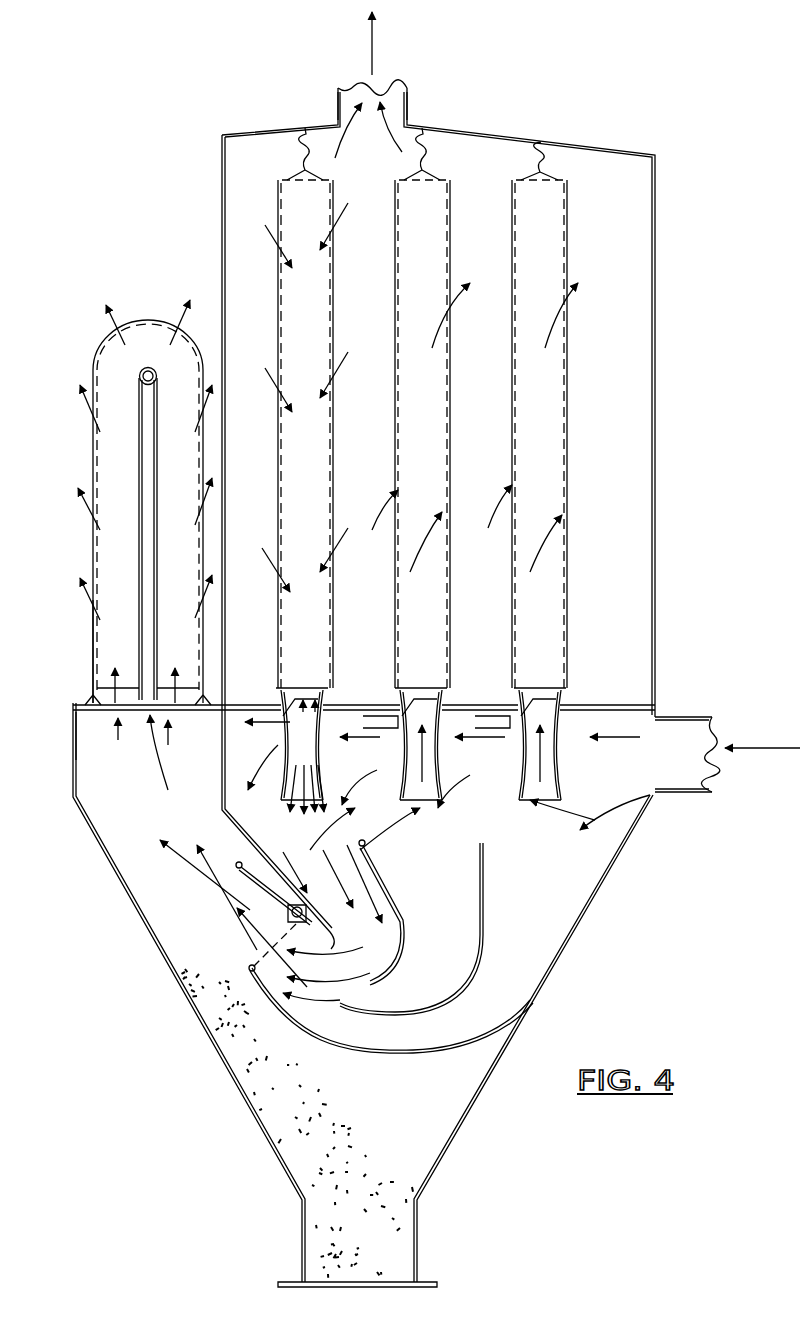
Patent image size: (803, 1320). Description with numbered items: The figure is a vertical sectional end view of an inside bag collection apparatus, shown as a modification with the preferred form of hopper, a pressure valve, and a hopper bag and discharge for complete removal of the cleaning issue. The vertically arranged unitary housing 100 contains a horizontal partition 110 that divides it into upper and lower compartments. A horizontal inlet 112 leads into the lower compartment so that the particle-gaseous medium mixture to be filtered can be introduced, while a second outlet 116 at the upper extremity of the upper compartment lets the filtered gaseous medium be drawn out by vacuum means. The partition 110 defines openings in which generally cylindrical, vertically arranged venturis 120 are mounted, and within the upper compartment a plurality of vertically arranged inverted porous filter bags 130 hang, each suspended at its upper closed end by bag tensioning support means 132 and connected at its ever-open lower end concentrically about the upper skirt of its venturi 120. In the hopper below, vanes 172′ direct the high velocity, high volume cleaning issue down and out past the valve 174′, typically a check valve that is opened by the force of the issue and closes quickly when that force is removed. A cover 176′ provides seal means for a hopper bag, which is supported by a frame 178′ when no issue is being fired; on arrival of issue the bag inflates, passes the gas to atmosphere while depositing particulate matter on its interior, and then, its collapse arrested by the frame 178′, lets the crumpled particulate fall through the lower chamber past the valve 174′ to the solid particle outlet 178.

The housing 100 is at (655, 422).
The second outlet 116 is at (409, 90).
The bag tensioning support means 132 is at (430, 168).
The porous filter bags 130 is at (568, 582).
The horizontal partition 110 is at (630, 705).
The horizontal inlet 112 is at (765, 744).
The venturis 120 is at (556, 766).
The solid particle outlet 178 is at (129, 469).
The cover 176′ is at (88, 712).
The valve 174′ is at (262, 879).
The vane 172′ is at (447, 1045).
The frame 178′ is at (342, 1282).